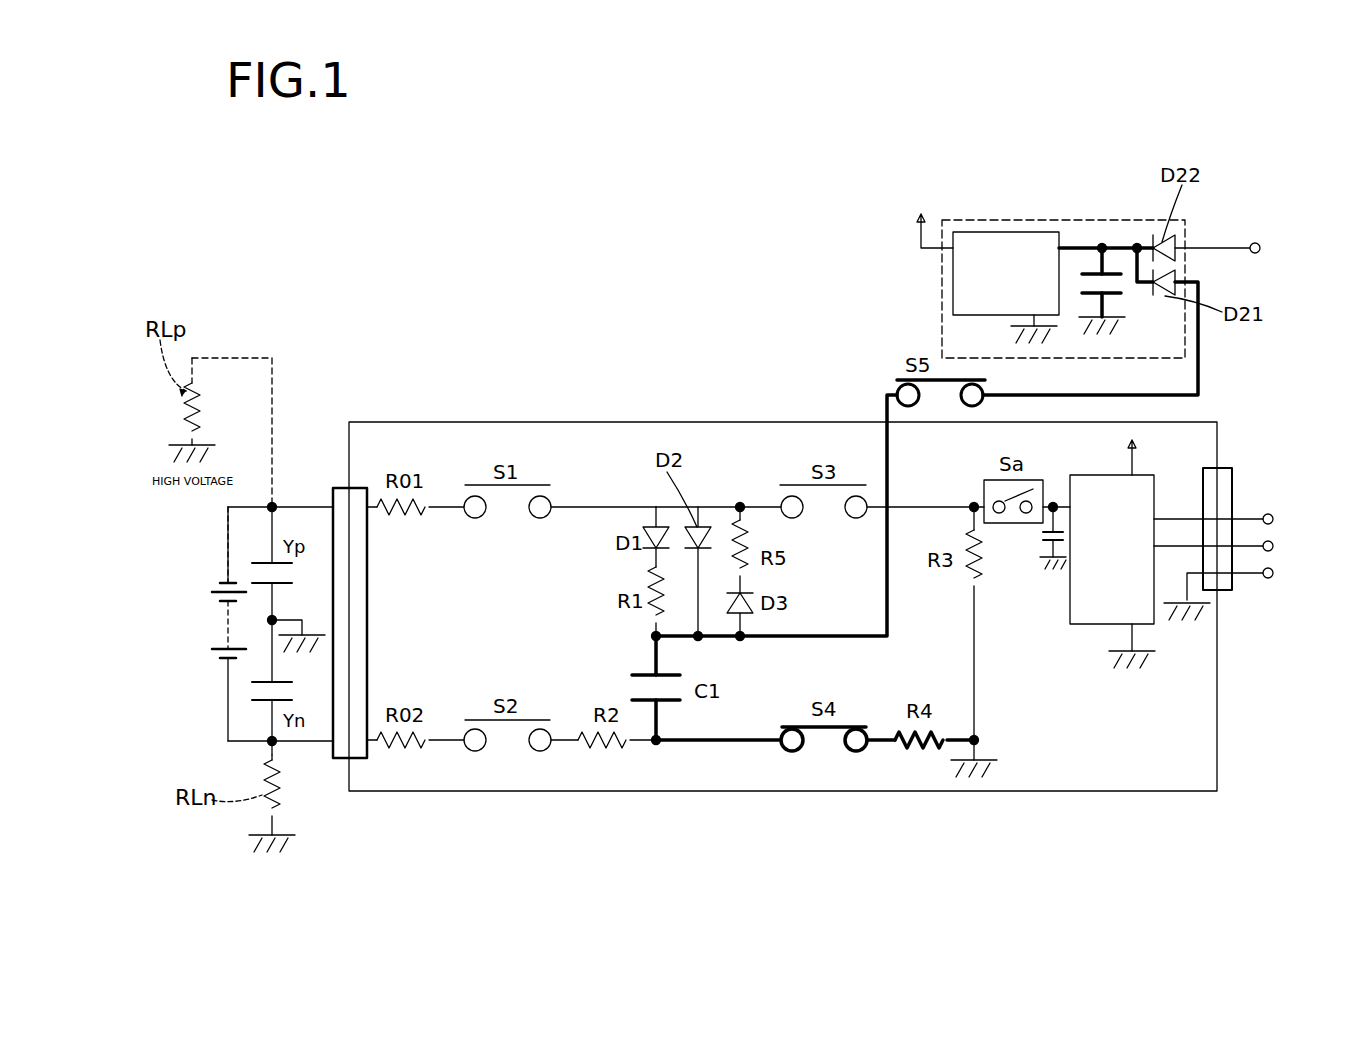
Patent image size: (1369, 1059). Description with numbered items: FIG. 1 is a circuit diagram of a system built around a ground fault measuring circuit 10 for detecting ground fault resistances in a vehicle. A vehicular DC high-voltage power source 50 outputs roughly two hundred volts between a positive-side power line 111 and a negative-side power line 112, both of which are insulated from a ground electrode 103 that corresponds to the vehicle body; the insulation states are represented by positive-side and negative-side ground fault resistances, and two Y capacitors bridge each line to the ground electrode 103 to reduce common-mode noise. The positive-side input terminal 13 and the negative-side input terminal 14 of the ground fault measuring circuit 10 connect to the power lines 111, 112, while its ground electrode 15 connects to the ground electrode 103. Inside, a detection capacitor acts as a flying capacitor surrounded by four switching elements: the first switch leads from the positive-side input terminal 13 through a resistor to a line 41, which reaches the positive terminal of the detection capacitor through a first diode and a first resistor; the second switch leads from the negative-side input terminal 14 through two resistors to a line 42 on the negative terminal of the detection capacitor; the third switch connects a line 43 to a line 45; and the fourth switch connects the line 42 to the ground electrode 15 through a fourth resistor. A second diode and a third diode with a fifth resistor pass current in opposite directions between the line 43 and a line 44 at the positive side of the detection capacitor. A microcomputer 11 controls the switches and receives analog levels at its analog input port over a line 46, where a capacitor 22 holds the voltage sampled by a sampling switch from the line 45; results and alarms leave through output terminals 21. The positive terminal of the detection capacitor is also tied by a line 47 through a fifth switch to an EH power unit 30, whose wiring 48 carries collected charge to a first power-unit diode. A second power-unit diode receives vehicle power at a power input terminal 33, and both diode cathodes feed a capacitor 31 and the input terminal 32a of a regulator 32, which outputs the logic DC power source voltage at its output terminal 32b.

The ground fault measuring circuit 10 is at (645, 422).
The microcomputer 11 is at (1088, 627).
The positive-side input terminal 13 is at (322, 487).
The negative-side input terminal 14 is at (323, 745).
The ground electrode 15 is at (985, 760).
The output terminals 21 is at (1273, 521).
The capacitor 22 is at (1047, 543).
The EH power unit 30 is at (1125, 220).
The capacitor 31 is at (1090, 270).
The regulator 32 is at (1010, 232).
The input terminal 32a is at (1067, 240).
The output terminal 32b is at (950, 252).
The power input terminal 33 is at (1258, 255).
The line 41 is at (585, 507).
The line 42 is at (650, 742).
The line 43 is at (740, 507).
The line 44 is at (653, 620).
The line 45 is at (917, 505).
The line 46 is at (1063, 503).
The line 47 is at (890, 614).
The wiring 48 is at (1200, 366).
The vehicular DC high-voltage power source 50 is at (229, 575).
The ground electrode 103 is at (285, 620).
The positive-side power line 111 is at (303, 505).
The negative-side power line 112 is at (303, 745).